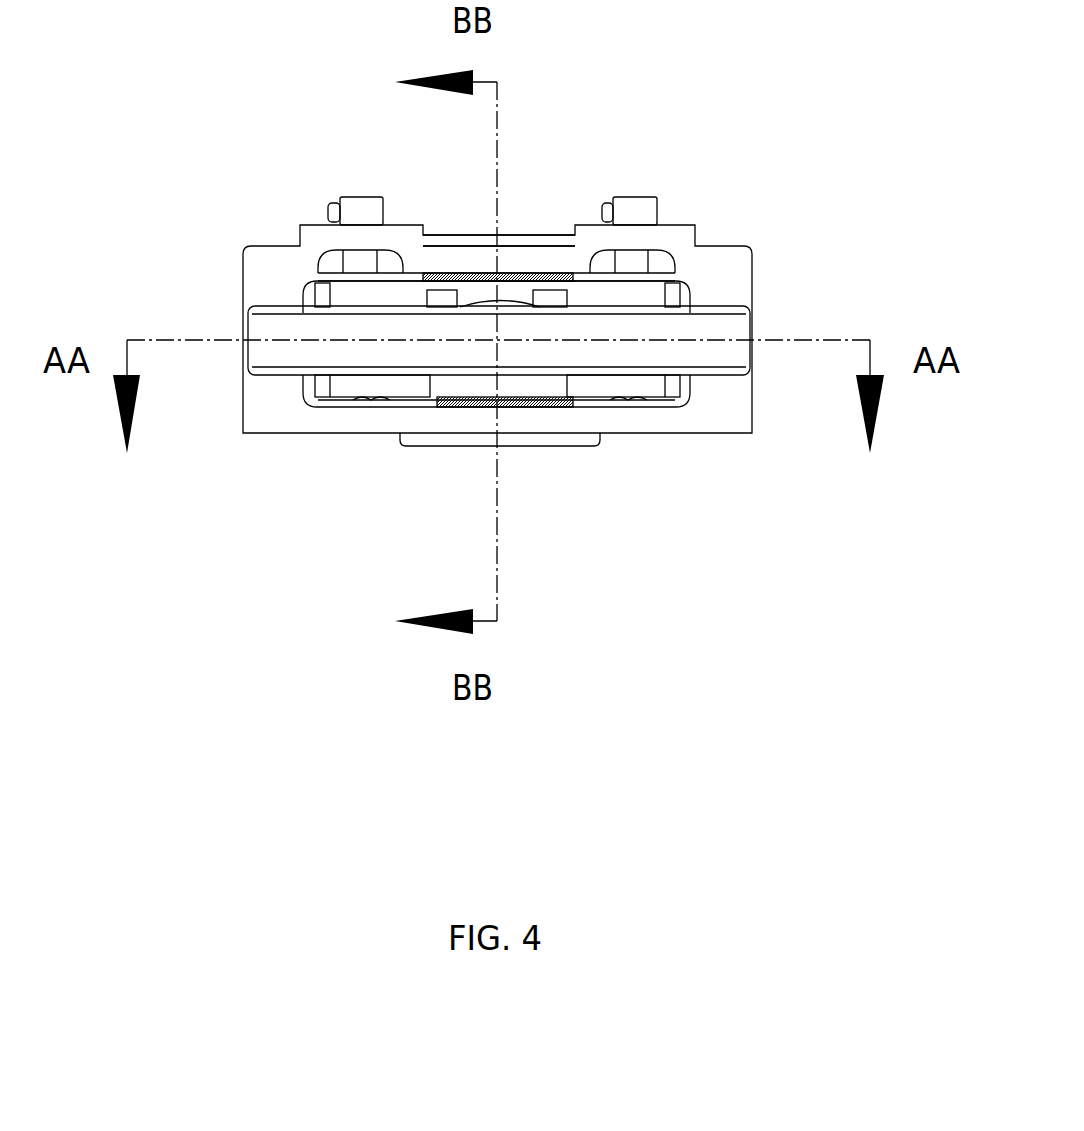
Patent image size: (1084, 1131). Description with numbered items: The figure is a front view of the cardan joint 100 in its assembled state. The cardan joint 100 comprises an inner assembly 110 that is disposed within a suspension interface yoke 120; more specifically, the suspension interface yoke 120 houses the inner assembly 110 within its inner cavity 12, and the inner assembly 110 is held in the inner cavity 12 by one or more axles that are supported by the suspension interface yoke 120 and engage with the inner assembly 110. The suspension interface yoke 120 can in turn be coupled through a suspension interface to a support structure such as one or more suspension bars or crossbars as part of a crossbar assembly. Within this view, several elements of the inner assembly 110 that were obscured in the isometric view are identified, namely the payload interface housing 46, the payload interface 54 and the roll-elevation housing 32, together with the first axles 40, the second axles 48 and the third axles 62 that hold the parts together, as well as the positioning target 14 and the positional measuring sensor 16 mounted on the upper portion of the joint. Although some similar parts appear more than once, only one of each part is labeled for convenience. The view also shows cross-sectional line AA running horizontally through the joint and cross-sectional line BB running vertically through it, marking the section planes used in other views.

The cardan joint 100 is at (210, 198).
The inner assembly 110 is at (280, 290).
The suspension interface yoke 120 is at (670, 424).
The inner cavity 12 is at (687, 294).
The positioning target 14 is at (647, 280).
The positional measuring sensor 16 is at (637, 212).
The roll-elevation housing 32 is at (443, 380).
The first axles 40 is at (510, 375).
The payload interface housing 46 is at (280, 352).
The second axles 48 is at (687, 377).
The payload interface 54 is at (374, 300).
The third axles 62 is at (517, 237).